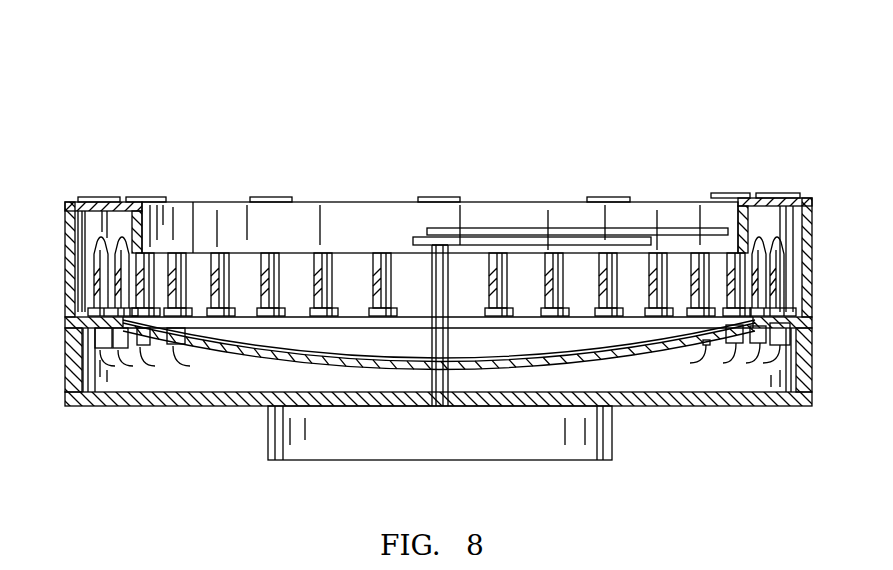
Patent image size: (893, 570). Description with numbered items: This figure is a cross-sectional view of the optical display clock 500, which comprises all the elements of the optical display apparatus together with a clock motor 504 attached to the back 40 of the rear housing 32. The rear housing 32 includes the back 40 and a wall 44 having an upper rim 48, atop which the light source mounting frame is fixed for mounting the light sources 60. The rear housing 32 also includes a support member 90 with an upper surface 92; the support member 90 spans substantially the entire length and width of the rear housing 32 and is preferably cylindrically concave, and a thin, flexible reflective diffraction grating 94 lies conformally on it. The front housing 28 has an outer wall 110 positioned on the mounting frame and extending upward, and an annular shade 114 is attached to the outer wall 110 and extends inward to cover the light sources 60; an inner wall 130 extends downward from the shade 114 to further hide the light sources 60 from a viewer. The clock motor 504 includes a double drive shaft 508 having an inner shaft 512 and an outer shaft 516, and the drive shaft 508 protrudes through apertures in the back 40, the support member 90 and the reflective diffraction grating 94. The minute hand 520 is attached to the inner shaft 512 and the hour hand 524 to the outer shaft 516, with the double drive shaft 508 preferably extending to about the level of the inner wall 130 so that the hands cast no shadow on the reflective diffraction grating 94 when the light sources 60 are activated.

The optical display clock 500 is at (359, 84).
The front housing 28 is at (55, 226).
The rear housing 32 is at (54, 384).
The back 40 is at (664, 405).
The wall 44 is at (813, 388).
The upper rim 48 is at (812, 322).
The light sources 60 is at (783, 268).
The support member 90 is at (233, 363).
The upper surface 92 is at (316, 360).
The reflective diffraction grating 94 is at (370, 368).
The outer wall 110 is at (813, 230).
The shade 114 is at (775, 225).
The inner wall 130 is at (738, 212).
The clock motor 504 is at (417, 450).
The double drive shaft 508 is at (426, 356).
The inner shaft 512 is at (447, 283).
The outer shaft 516 is at (432, 312).
The minute hand 520 is at (683, 228).
The hour hand 524 is at (572, 240).